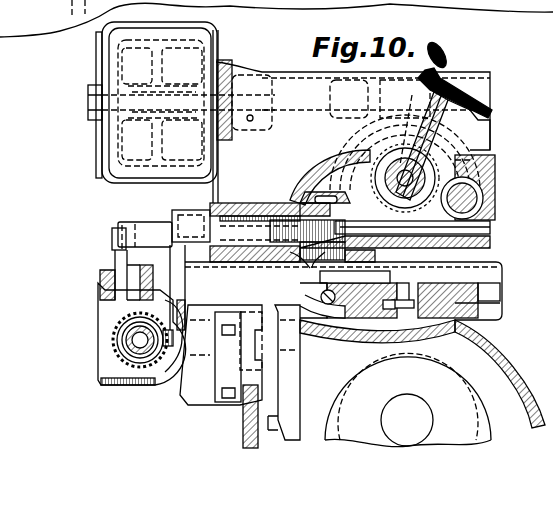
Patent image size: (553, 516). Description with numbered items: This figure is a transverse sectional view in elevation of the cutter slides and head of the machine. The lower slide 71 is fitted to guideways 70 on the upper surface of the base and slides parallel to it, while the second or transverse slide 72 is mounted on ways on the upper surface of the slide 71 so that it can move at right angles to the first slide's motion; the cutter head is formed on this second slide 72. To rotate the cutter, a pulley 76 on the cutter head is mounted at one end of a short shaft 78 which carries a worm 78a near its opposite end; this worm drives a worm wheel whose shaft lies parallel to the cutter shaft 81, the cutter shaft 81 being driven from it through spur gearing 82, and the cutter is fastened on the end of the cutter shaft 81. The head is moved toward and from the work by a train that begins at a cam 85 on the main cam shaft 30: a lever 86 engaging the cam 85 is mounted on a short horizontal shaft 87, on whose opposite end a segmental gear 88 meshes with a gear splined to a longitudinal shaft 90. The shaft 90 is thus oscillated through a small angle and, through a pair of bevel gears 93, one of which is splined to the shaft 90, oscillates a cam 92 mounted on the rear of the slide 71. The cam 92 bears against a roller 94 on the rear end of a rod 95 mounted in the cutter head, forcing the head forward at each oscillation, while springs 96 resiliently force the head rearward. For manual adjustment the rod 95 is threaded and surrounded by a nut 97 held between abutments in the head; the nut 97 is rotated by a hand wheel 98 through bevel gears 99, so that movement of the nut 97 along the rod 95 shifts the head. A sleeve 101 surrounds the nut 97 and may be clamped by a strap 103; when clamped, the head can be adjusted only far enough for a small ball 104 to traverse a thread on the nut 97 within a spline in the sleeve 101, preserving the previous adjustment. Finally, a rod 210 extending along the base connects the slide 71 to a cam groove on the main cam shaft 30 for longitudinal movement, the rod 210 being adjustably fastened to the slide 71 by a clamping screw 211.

The slide 71 is at (484, 2).
The pulley 76 is at (112, 176).
The short shaft 78 is at (300, 68).
The worm 78a is at (422, 76).
The hand wheel 98 is at (470, 105).
The nut 97 is at (380, 190).
The sleeve 101 is at (338, 188).
The ball 104 is at (322, 196).
The spur gearing 82 is at (495, 170).
The cutter shaft 81 is at (483, 197).
The second slide 72 is at (258, 203).
The rod 95 is at (205, 215).
The roller 94 is at (168, 224).
The cam 92 is at (160, 228).
The bevel gears 99 is at (440, 258).
The springs 96 is at (322, 268).
The strap 103 is at (380, 271).
The rod 210 is at (418, 292).
The guideways 70 is at (502, 298).
The clamping screw 211 is at (395, 316).
The cam 85 is at (492, 421).
The main cam shaft 30 is at (410, 408).
The bevel gears 93 is at (98, 331).
The longitudinal shaft 90 is at (137, 368).
The segmental gear 88 is at (168, 374).
The short horizontal shaft 87 is at (206, 365).
The lever 86 is at (305, 370).